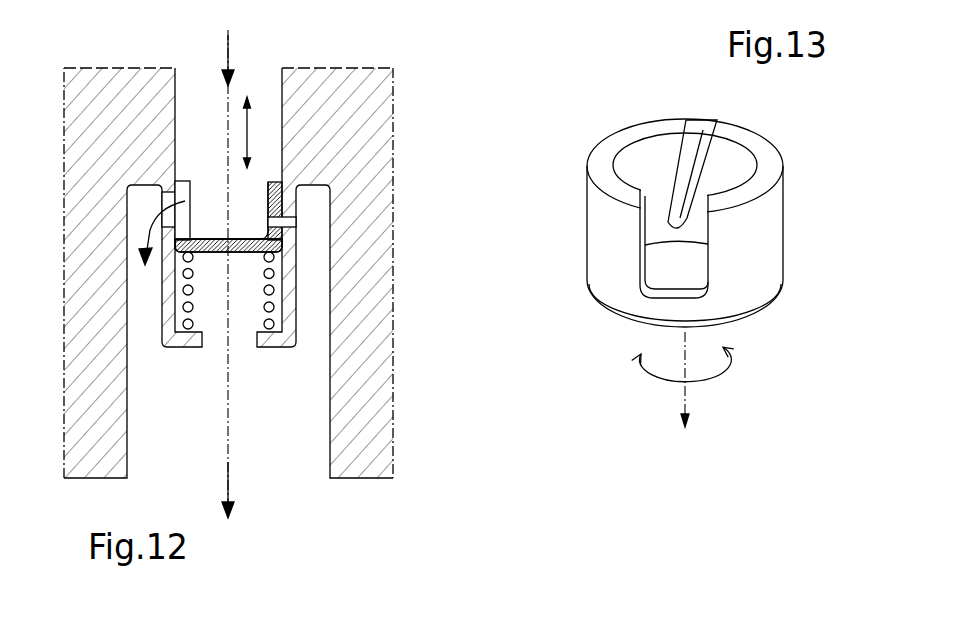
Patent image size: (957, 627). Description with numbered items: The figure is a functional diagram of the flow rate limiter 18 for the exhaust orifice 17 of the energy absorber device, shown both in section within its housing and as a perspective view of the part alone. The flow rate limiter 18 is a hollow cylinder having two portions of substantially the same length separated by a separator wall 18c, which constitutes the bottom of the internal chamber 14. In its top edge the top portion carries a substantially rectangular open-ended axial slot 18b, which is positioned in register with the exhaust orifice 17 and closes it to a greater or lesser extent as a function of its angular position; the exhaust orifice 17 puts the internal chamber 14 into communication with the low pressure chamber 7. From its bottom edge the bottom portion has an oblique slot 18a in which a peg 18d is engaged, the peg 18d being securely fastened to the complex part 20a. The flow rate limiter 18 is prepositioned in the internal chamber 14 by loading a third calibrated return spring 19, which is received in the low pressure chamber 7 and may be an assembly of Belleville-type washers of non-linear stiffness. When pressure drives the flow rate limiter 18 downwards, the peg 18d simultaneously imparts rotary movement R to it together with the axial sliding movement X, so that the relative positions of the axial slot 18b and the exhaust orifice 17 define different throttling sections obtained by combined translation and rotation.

In FIG. 12, the low pressure chamber 7 is at (266, 450).
In FIG. 12, the internal chamber 14 is at (216, 116).
In FIG. 12, the exhaust orifice 17 is at (207, 170).
In FIG. 13, the flow rate limiter 18 is at (659, 183).
In FIG. 13, the oblique slot 18a is at (697, 148).
In FIG. 12, the axial slot 18b is at (192, 232).
In FIG. 13, the axial slot 18b is at (640, 266).
In FIG. 12, the separator wall 18c is at (245, 256).
In FIG. 13, the separator wall 18c is at (696, 279).
In FIG. 12, the peg 18d is at (297, 221).
In FIG. 12, the third calibrated return spring 19 is at (198, 315).
In FIG. 12, the complex part 20a is at (300, 308).
In FIG. 13, the rotary movement R is at (650, 377).
In FIG. 13, the axial sliding movement X is at (687, 400).